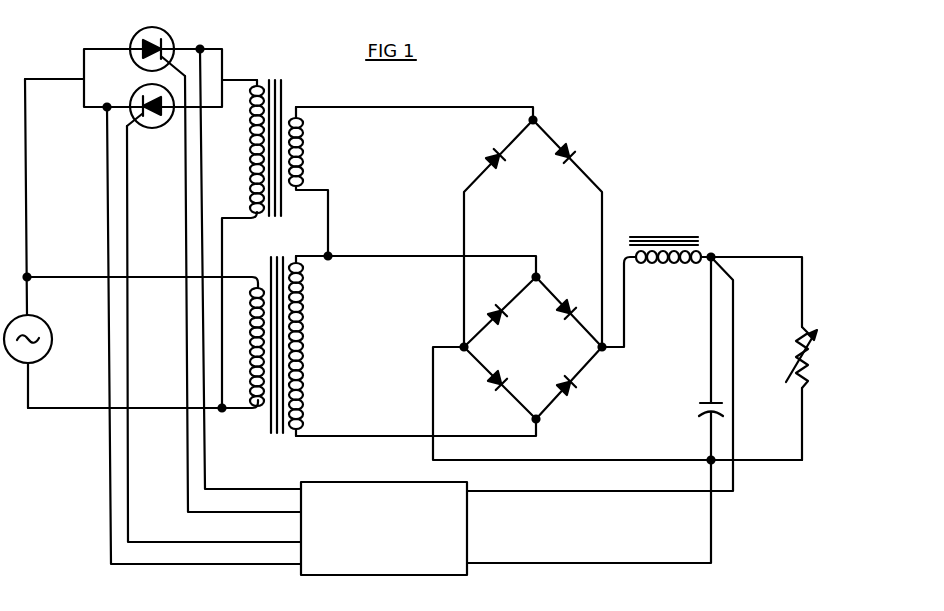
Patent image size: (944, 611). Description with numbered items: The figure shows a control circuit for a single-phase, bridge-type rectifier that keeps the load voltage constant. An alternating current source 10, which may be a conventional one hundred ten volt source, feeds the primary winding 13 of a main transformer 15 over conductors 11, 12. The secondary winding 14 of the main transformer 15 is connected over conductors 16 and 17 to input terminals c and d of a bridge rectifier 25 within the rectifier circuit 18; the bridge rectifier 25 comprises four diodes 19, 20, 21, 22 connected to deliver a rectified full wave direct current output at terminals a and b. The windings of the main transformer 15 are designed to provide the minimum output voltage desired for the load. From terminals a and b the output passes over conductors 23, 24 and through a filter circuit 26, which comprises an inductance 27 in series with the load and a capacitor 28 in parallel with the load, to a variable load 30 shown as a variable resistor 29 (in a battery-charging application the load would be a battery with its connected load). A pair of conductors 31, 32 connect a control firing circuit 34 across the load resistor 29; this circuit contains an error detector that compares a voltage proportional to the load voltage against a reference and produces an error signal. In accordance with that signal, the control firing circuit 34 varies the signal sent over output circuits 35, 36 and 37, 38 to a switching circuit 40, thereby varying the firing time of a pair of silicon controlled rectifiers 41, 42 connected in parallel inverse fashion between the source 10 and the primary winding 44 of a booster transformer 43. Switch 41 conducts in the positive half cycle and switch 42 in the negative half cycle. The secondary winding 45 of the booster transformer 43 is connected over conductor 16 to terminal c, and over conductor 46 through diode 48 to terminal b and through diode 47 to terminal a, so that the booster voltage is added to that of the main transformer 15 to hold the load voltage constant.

The alternating current source 10 is at (33, 302).
The conductor 11 is at (155, 284).
The conductor 12 is at (143, 396).
The primary winding 13 is at (250, 360).
The secondary winding 14 is at (304, 365).
The main transformer 15 is at (266, 262).
The conductor 16 is at (402, 252).
The conductor 17 is at (351, 430).
The rectifier circuit 18 is at (587, 77).
The diode 19 is at (503, 322).
The diode 20 is at (561, 319).
The diode 21 is at (503, 374).
The diode 22 is at (562, 377).
The conductor 23 is at (626, 333).
The conductor 24 is at (626, 460).
The bridge rectifier 25 is at (523, 358).
The filter circuit 26 is at (673, 234).
The inductance 27 is at (669, 266).
The capacitor 28 is at (695, 410).
The variable resistor 29 is at (791, 344).
The variable load 30 is at (804, 234).
The conductor 31 is at (571, 489).
The conductor 32 is at (572, 563).
The control firing circuit 34 is at (384, 528).
The output circuit 35 is at (247, 478).
The output circuit 36 is at (249, 500).
The output circuit 37 is at (249, 530).
The output circuit 38 is at (252, 552).
The switching circuit 40 is at (176, 36).
The silicon controlled rectifier 41 is at (126, 38).
The silicon controlled rectifier 42 is at (164, 133).
The booster transformer 43 is at (233, 70).
The primary winding 44 is at (250, 157).
The secondary winding 45 is at (307, 163).
The conductor 46 is at (436, 104).
The diode 47 is at (485, 154).
The diode 48 is at (579, 151).